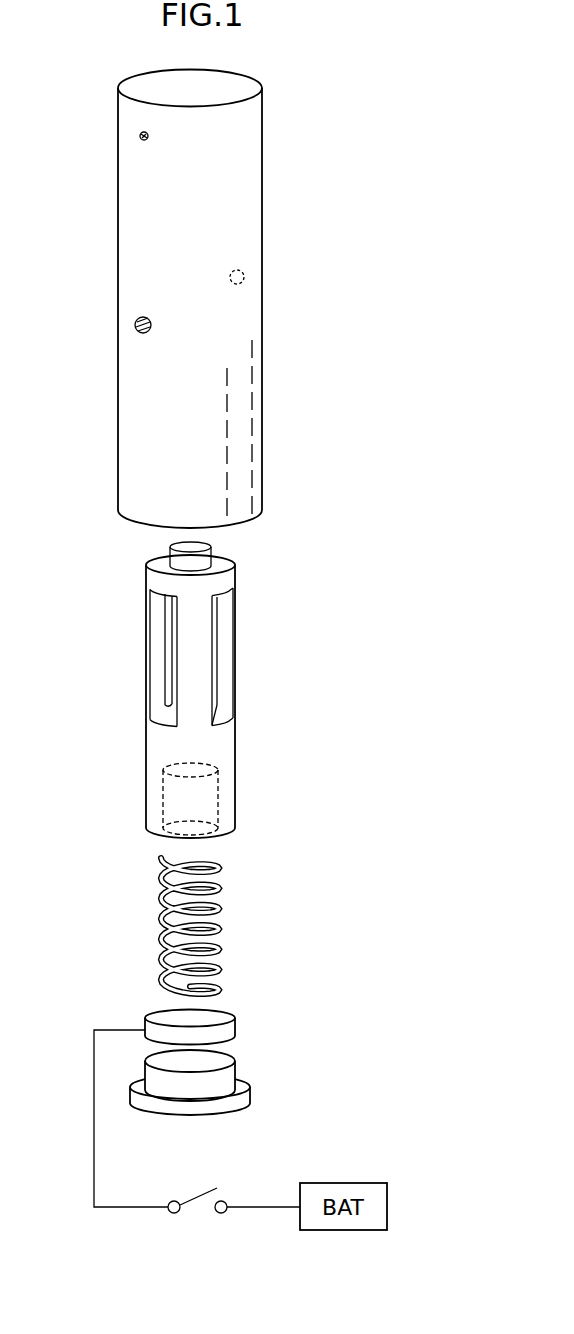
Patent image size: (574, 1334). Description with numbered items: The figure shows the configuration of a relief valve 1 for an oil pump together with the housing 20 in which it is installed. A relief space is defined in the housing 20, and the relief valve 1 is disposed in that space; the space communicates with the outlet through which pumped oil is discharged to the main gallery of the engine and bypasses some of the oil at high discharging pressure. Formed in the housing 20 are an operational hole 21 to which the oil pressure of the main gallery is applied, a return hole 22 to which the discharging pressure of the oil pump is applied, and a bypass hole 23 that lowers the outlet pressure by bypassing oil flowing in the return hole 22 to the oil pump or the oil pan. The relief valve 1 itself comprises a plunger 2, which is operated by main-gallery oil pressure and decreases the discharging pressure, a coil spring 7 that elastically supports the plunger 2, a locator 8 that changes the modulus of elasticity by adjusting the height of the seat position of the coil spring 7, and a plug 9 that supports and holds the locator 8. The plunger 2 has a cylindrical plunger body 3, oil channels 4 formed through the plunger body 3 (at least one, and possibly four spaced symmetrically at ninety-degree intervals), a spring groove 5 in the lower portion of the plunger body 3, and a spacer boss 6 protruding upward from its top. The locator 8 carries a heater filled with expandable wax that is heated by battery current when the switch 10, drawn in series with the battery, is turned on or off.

The relief valve 1 is at (323, 740).
The plunger 2 is at (237, 744).
The plunger body 3 is at (160, 745).
The oil channels 4 is at (158, 652).
The spring groove 5 is at (175, 803).
The spacer boss 6 is at (172, 546).
The coil spring 7 is at (215, 908).
The locator 8 is at (232, 1032).
The plug 9 is at (228, 1078).
The switch 10 is at (199, 1190).
The housing 20 is at (237, 135).
The operational hole 21 is at (141, 139).
The return hole 22 is at (244, 276).
The bypass hole 23 is at (140, 334).